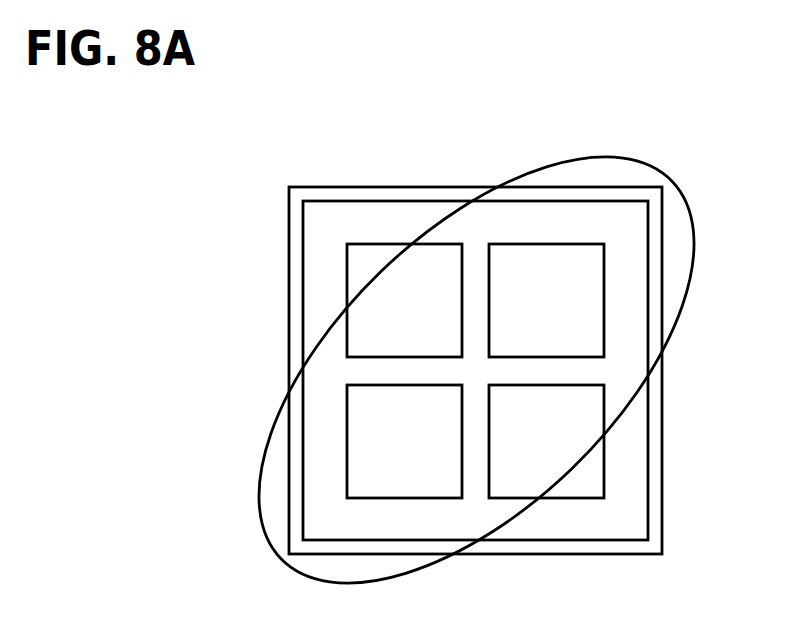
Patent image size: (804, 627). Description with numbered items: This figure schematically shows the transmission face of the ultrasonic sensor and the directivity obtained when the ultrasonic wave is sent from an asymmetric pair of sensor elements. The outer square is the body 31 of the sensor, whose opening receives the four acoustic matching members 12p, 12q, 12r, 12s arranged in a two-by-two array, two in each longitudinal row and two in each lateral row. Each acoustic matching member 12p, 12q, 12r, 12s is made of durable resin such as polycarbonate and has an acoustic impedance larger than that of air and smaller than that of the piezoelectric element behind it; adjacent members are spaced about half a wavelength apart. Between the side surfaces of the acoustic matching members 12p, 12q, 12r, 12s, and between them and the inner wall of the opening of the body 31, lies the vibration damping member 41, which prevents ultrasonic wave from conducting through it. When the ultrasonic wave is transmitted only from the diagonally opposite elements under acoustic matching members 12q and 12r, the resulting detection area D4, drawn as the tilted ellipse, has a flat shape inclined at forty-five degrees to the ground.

The body 31 is at (296, 309).
The vibration damping member 41 is at (634, 418).
The acoustic matching member 12r is at (370, 272).
The acoustic matching member 12s is at (549, 262).
The acoustic matching member 12p is at (398, 480).
The acoustic matching member 12q is at (585, 469).
The detection area D4 is at (643, 157).